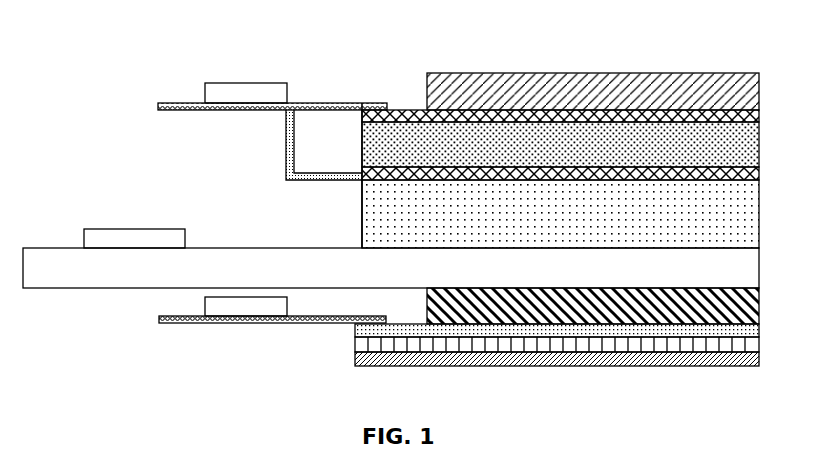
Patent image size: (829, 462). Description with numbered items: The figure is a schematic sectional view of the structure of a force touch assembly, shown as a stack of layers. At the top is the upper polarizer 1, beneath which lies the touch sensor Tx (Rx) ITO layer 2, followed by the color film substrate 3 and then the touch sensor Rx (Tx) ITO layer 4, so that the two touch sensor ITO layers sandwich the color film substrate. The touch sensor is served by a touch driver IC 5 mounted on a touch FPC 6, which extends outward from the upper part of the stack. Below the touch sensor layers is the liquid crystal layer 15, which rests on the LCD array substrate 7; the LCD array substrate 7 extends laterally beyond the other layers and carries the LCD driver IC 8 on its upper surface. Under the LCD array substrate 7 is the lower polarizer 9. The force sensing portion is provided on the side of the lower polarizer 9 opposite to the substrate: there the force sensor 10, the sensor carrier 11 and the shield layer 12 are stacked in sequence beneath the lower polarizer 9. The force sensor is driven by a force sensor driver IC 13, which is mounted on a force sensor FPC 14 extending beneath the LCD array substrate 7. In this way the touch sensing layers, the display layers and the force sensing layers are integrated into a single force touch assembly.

The upper polarizer 1 is at (476, 93).
The touch sensor Tx (Rx) ITO layer 2 is at (368, 118).
The color film substrate 3 is at (383, 144).
The touch sensor Rx (Tx) ITO layer 4 is at (373, 173).
The touch driver IC 5 is at (242, 93).
The touch FPC 6 is at (168, 104).
The LCD array substrate 7 is at (75, 279).
The LCD driver IC 8 is at (108, 236).
The lower polarizer 9 is at (447, 302).
The force sensor 10 is at (360, 330).
The sensor carrier 11 is at (360, 345).
The shield layer 12 is at (360, 359).
The force sensor driver IC 13 is at (220, 306).
The force sensor FPC 14 is at (173, 325).
The liquid crystal layer 15 is at (387, 227).